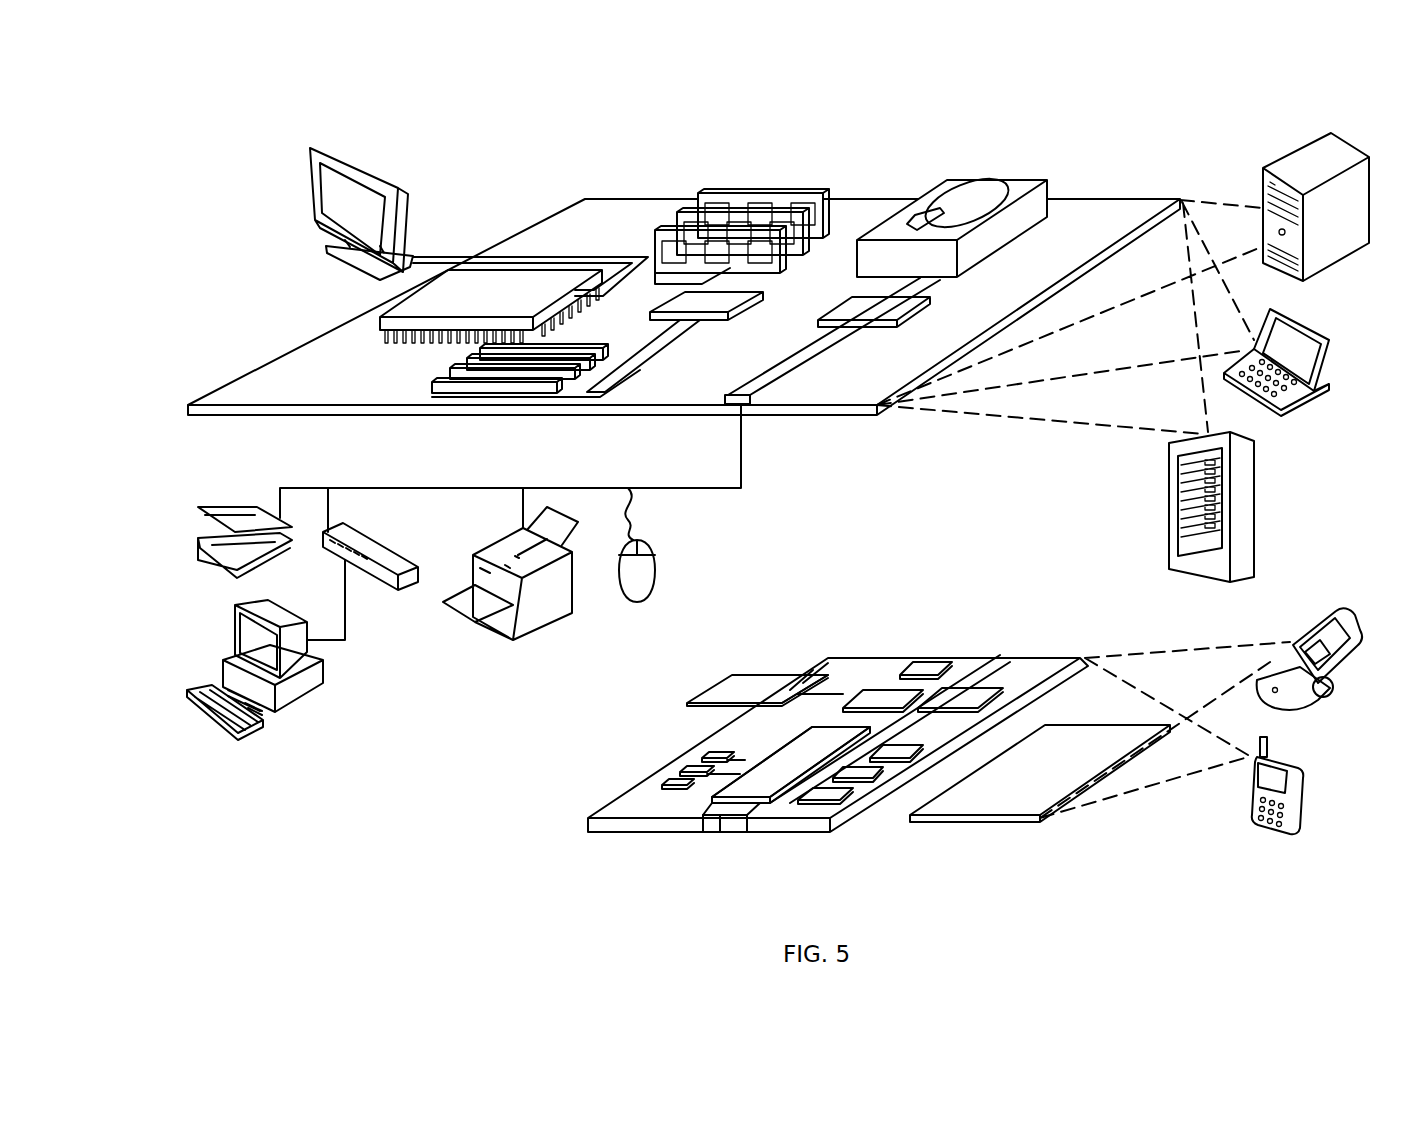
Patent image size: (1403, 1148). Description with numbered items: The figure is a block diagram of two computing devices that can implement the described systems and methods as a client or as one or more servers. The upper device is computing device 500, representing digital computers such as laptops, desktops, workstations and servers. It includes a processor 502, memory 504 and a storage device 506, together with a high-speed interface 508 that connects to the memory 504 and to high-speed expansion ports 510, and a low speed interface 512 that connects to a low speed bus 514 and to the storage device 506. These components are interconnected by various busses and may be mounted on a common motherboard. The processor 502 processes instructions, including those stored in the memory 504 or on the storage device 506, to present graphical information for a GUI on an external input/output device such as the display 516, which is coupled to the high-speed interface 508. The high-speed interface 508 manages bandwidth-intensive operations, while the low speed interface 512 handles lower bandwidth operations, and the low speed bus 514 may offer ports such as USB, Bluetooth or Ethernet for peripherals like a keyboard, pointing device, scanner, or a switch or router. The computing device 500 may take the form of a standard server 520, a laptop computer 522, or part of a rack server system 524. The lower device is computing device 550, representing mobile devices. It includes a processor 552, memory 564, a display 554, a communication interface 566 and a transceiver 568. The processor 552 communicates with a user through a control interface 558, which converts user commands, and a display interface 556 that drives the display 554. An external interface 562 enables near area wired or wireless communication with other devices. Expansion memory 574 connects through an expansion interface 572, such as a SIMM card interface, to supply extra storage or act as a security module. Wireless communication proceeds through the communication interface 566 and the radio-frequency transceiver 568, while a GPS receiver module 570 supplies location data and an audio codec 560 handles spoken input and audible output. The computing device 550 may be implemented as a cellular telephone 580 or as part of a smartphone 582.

The computing device 500 is at (508, 175).
The processor 502 is at (380, 317).
The memory 504 is at (710, 190).
The storage device 506 is at (947, 181).
The high-speed interface 508 is at (683, 302).
The high-speed expansion ports 510 is at (457, 373).
The low speed interface 512 is at (857, 303).
The low speed bus 514 is at (752, 402).
The display 516 is at (313, 147).
The standard server 520 is at (1263, 182).
The laptop computer 522 is at (1329, 329).
The rack server system 524 is at (1169, 531).
The computing device 550 is at (572, 828).
The processor 552 is at (763, 787).
The display 554 is at (1000, 805).
The display interface 556 is at (837, 800).
The control interface 558 is at (865, 780).
The audio codec 560 is at (892, 752).
The external interface 562 is at (728, 820).
The memory 564 is at (680, 780).
The communication interface 566 is at (883, 697).
The transceiver 568 is at (962, 697).
The GPS receiver module 570 is at (933, 662).
The expansion interface 572 is at (813, 670).
The expansion memory 574 is at (737, 670).
The cellular telephone 580 is at (1293, 620).
The smartphone 582 is at (1250, 783).